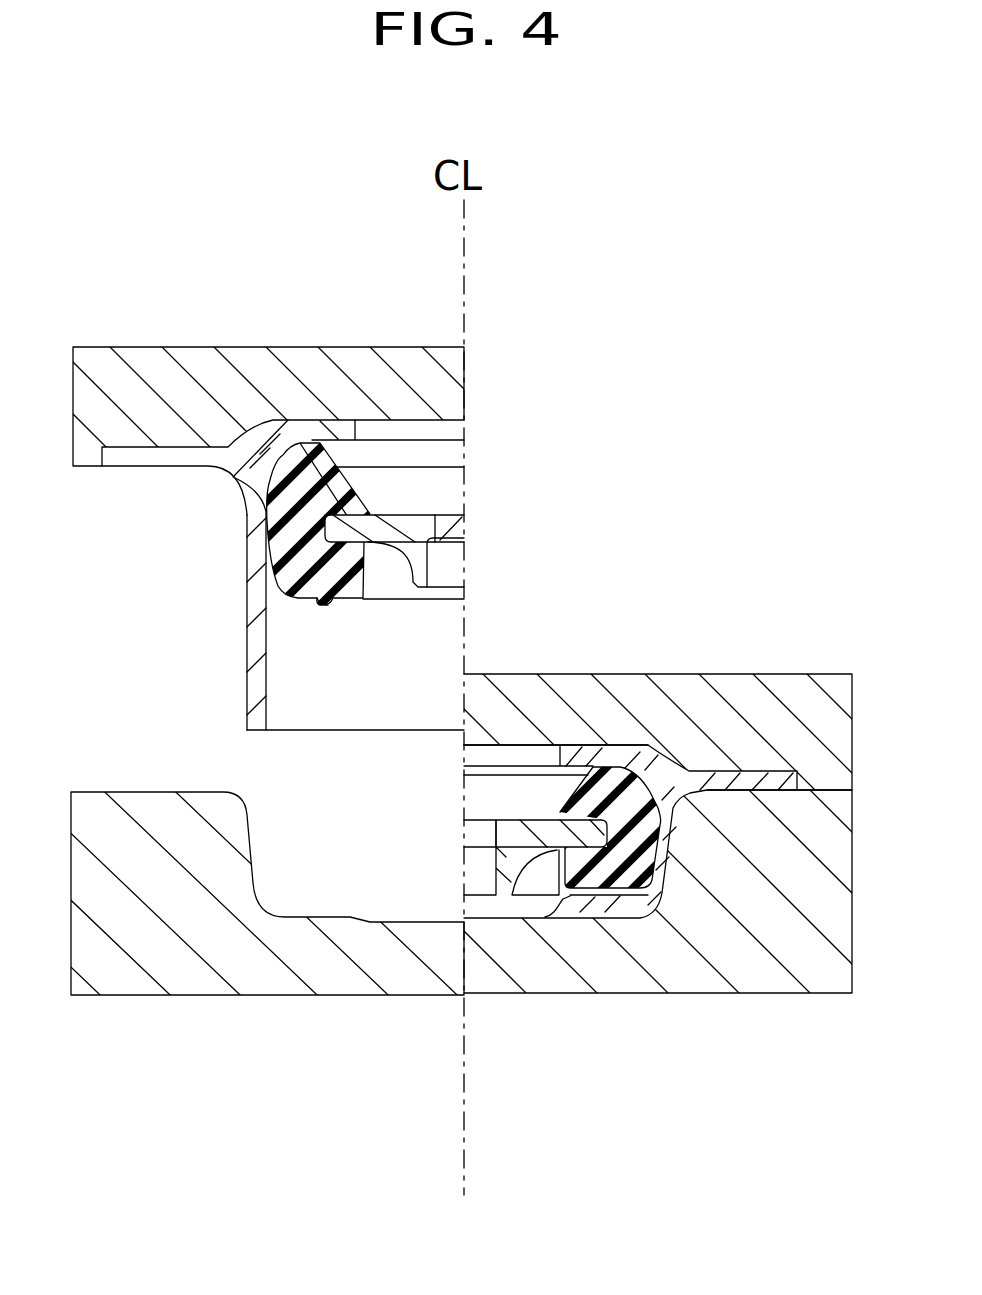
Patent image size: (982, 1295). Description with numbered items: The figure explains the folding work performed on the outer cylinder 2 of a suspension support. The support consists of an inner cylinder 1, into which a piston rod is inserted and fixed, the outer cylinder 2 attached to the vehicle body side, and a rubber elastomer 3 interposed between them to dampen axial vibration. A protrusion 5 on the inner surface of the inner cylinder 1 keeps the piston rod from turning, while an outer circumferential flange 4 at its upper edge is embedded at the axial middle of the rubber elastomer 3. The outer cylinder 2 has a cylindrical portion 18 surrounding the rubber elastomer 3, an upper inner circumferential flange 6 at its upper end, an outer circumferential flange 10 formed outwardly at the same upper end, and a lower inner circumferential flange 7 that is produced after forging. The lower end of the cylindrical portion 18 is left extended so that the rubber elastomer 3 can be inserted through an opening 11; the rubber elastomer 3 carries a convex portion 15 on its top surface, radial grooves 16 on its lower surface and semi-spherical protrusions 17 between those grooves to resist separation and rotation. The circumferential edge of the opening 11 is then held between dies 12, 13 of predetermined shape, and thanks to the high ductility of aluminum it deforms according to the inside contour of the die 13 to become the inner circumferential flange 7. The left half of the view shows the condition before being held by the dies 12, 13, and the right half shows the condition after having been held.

The inner cylinder 1 is at (462, 566).
The outer cylinder 2 is at (245, 546).
The rubber elastomer 3 is at (292, 578).
The outer circumferential flange 4 is at (383, 533).
The protrusion 5 is at (428, 538).
The upper inner circumferential flange 6 is at (343, 430).
The lower inner circumferential flange 7 is at (623, 903).
The outer circumferential flange 10 is at (158, 447).
The opening 11 is at (347, 733).
The die 12 is at (97, 350).
The die 13 is at (132, 967).
The convex portion 15 is at (293, 453).
The radial grooves 16 is at (565, 905).
The semi-spherical protrusions 17 is at (325, 604).
The cylindrical portion 18 is at (660, 852).